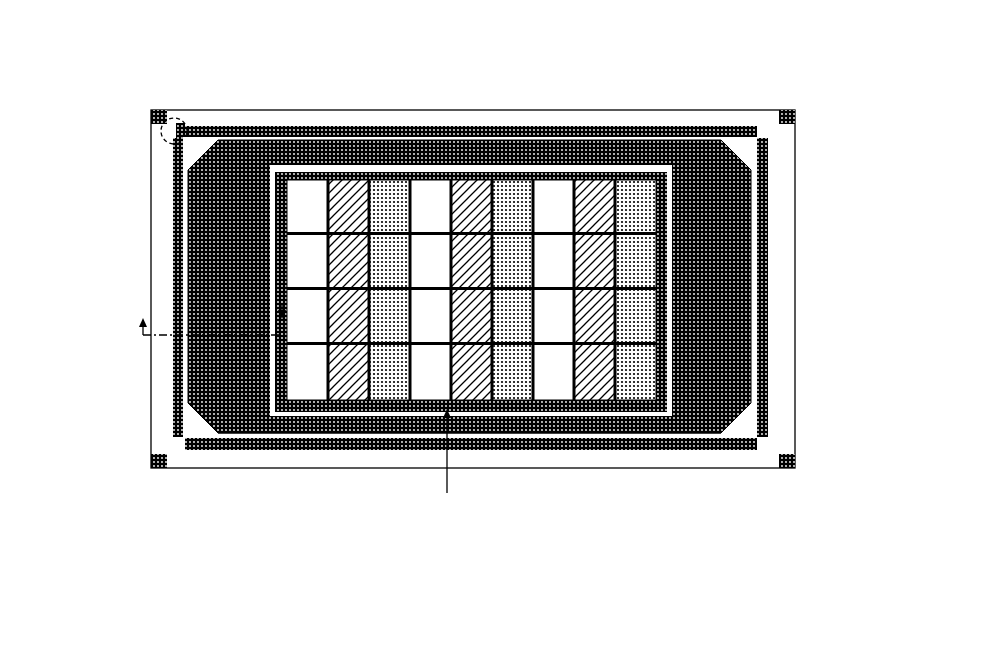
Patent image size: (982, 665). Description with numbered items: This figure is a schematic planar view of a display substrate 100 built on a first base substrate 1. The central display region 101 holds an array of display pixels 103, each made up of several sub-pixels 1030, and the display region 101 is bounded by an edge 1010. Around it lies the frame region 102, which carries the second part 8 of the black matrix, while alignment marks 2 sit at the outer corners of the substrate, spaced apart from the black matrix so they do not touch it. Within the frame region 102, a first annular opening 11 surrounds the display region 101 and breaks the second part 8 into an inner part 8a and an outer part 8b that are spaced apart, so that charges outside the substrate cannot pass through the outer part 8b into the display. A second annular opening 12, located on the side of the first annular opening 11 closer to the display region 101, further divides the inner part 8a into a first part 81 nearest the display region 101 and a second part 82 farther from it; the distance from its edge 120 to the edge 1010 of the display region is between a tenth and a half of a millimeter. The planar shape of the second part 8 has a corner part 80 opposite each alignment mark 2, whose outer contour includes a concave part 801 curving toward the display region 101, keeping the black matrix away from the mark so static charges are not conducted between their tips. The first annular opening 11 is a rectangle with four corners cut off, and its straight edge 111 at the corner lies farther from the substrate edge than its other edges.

The display substrate 100 is at (190, 21).
The first base substrate 1 is at (398, 110).
The alignment mark 2 is at (158, 110).
The display region 101 is at (465, 295).
The frame region 102 is at (338, 115).
The display pixel 103 is at (532, 175).
The sub-pixel 1030 is at (640, 195).
The edge of the display region 1010 is at (562, 400).
The second part of the black matrix 8 is at (40, 200).
The inner part 8a is at (397, 286).
The outer part 8b is at (176, 202).
The corner part 80 is at (187, 120).
The concave part 801 is at (175, 137).
The first part of the inner part 81 is at (284, 283).
The second part of the inner part 82 is at (226, 241).
The first annular opening 11 is at (456, 288).
The edge of the first annular opening 111 is at (173, 158).
The second annular opening 12 is at (457, 330).
The edge of the second annular opening 120 is at (492, 417).